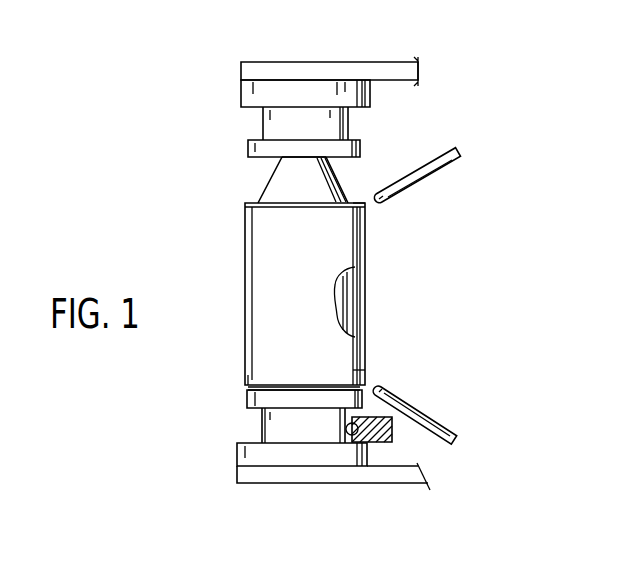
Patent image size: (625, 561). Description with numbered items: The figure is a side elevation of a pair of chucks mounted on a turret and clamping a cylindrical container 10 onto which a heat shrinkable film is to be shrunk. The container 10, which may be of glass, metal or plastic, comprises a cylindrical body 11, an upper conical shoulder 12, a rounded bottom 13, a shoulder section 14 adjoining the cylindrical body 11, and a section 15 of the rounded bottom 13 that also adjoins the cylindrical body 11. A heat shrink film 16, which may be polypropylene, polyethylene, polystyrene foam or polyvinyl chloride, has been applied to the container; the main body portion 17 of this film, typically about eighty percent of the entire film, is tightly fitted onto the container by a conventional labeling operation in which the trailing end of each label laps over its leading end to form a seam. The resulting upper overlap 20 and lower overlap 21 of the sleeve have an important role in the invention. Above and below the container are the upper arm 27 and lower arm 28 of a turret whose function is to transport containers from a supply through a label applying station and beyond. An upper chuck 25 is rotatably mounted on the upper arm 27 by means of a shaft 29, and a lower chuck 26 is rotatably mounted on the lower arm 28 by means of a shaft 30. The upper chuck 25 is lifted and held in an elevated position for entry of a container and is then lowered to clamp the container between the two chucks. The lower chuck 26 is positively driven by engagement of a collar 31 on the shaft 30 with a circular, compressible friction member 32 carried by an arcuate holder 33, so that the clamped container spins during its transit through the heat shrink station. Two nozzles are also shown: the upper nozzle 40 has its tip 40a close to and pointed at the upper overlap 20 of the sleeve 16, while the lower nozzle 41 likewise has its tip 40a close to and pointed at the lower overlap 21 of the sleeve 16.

The cylindrical container 10 is at (384, 283).
The cylindrical body 11 is at (353, 303).
The upper conical shoulder 12 is at (278, 173).
The rounded bottom 13 is at (250, 390).
The shoulder section 14 is at (363, 205).
The section of the rounded bottom 15 is at (363, 375).
The heat shrink film 16 is at (296, 306).
The main body portion of the film 17 is at (363, 347).
The upper overlap 20 is at (247, 208).
The lower overlap 21 is at (245, 378).
The upper chuck 25 is at (362, 149).
The lower chuck 26 is at (253, 398).
The upper arm 27 is at (338, 62).
The lower arm 28 is at (270, 487).
The shaft 29 is at (263, 125).
The shaft 30 is at (260, 417).
The collar 31 is at (308, 441).
The circular compressible friction member 32 is at (365, 440).
The arcuate holder 33 is at (390, 432).
The upper nozzle 40 is at (443, 170).
The nozzle tip 40a is at (390, 200).
The lower nozzle 41 is at (430, 423).